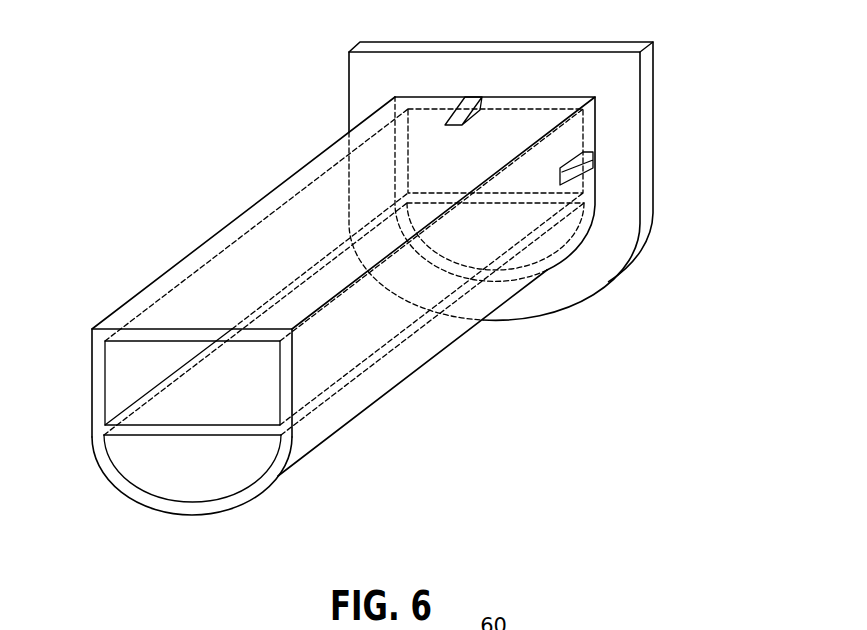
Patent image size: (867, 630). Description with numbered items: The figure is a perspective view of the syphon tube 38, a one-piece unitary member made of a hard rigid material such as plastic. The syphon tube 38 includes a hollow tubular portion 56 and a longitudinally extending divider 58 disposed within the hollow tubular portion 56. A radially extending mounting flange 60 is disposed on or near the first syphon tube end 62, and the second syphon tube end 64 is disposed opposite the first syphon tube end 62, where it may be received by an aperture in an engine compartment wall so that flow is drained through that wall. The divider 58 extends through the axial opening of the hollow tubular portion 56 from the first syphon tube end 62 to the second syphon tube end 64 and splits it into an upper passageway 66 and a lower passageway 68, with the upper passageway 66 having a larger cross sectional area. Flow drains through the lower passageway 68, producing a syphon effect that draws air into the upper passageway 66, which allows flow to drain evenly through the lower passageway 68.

The syphon tube 38 is at (393, 290).
The hollow tubular portion 56 is at (433, 352).
The divider 58 is at (177, 446).
The mounting flange 60 is at (651, 75).
The first syphon tube end 62 is at (331, 146).
The second syphon tube end 64 is at (107, 328).
The upper passageway 66 is at (273, 388).
The lower passageway 68 is at (229, 468).